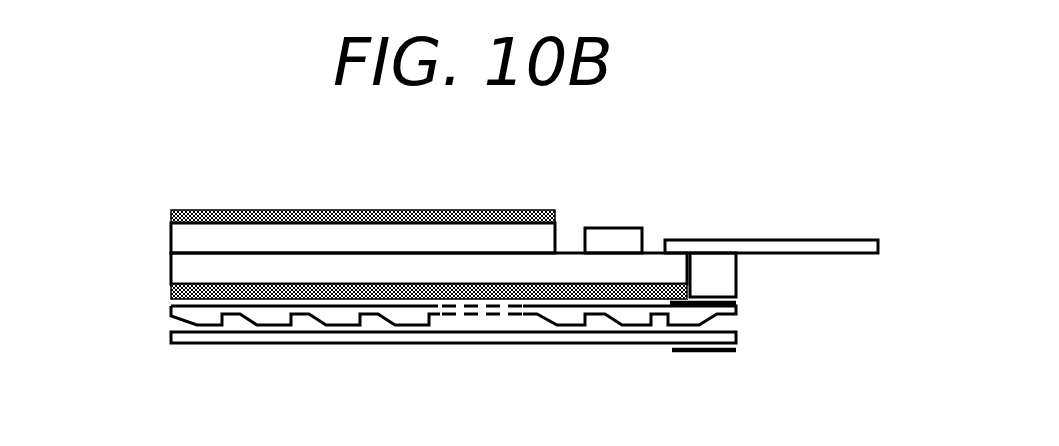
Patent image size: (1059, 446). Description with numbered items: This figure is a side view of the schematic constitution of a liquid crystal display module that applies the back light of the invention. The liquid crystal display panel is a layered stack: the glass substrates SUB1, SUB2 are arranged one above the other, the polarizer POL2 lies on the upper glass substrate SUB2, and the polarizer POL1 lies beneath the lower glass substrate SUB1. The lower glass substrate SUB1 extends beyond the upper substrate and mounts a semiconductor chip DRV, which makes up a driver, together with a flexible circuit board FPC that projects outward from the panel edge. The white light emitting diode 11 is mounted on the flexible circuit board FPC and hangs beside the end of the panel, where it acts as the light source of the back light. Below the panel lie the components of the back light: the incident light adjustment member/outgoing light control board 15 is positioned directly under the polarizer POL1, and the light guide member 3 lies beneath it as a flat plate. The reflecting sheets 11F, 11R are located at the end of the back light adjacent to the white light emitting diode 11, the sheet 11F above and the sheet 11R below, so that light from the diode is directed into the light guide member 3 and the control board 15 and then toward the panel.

The polarizer POL2 is at (171, 213).
The glass substrate SUB2 is at (176, 240).
The glass substrate SUB1 is at (178, 268).
The polarizer POL1 is at (171, 297).
The semiconductor chip DRV is at (610, 227).
The flexible circuit board FPC is at (780, 239).
The white light emitting diode 11 is at (728, 275).
The reflecting sheet 11F is at (737, 302).
The incident light adjustment member/outgoing light control board 15 is at (575, 318).
The light guide member 3 is at (737, 338).
The reflecting sheet 11R is at (698, 353).